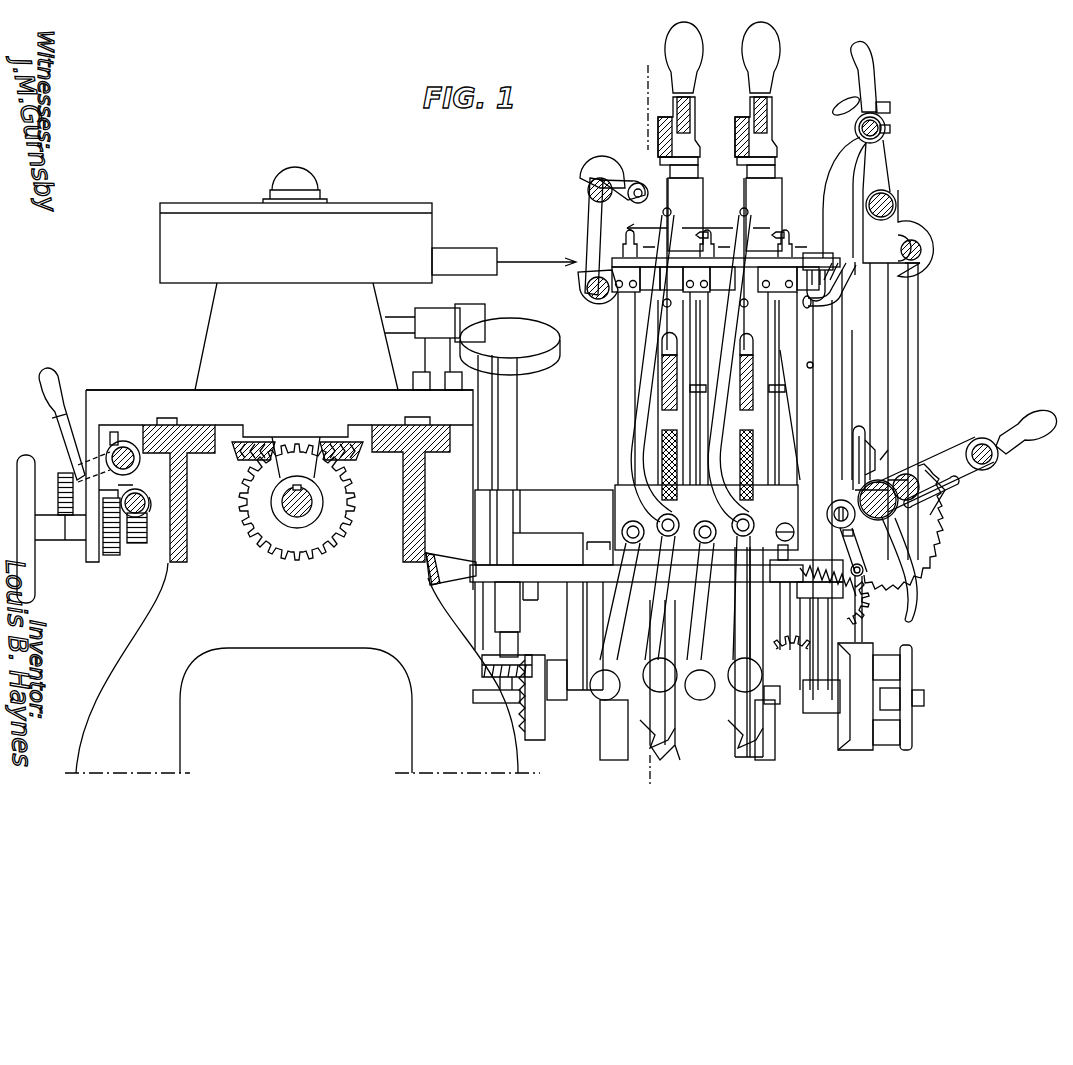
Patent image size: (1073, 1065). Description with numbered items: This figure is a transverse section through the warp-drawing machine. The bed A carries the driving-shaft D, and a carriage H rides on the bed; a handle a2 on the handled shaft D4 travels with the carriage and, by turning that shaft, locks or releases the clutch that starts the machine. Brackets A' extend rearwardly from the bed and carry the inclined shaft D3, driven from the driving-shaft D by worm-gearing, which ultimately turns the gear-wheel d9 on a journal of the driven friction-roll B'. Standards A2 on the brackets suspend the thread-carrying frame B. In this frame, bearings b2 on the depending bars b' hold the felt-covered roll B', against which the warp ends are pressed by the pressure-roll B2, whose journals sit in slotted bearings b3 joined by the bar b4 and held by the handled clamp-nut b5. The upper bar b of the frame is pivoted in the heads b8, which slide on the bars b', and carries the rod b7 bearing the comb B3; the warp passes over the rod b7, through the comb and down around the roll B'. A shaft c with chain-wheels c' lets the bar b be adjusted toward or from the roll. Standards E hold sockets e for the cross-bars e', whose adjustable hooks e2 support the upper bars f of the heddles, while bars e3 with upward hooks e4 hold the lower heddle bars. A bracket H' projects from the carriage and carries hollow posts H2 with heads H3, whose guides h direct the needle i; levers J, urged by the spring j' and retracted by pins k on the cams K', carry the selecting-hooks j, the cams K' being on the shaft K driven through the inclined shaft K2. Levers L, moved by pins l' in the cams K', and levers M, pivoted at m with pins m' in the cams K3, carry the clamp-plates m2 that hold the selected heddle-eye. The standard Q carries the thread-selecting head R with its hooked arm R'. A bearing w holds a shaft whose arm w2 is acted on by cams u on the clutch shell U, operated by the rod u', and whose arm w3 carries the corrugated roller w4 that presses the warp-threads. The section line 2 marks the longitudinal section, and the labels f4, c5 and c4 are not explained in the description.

The bed A is at (302, 470).
The carriage H is at (279, 378).
The needle i is at (536, 251).
The driving-shaft D is at (297, 487).
The handle a2 is at (62, 424).
The handled shaft D4 is at (86, 517).
The inclined shaft D3 is at (452, 570).
The inclined shaft K2 is at (515, 478).
The brackets or extensions A' is at (544, 527).
The bracket H' is at (636, 611).
The rod u' is at (688, 686).
The shaft K is at (679, 697).
The cams K3 is at (687, 730).
The pins k is at (772, 695).
The cams K' is at (701, 653).
The section line 2 is at (648, 425).
The standards E is at (721, 186).
The sockets e is at (723, 127).
The cross-bars e' is at (734, 115).
The adjustable hooks e2 is at (752, 114).
The pointer rod f4 is at (715, 224).
The selecting-hook j is at (715, 243).
The guides h is at (613, 230).
The heads H3 is at (726, 275).
The clamp-plates m2 is at (715, 277).
The hollow posts H2 is at (705, 388).
The hooks e4 is at (705, 400).
The bars e3 is at (803, 411).
The levers J is at (734, 392).
The upper bars of the heddles f is at (650, 372).
The levers L is at (706, 498).
The levers M is at (675, 591).
The pivot m is at (688, 532).
The pins m' is at (652, 685).
The pins l' is at (702, 675).
The spring j' is at (788, 415).
The standard Q is at (819, 500).
The standards A2 is at (855, 348).
The thread-selecting head R is at (825, 267).
The arm R' is at (837, 285).
The comb B3 is at (860, 130).
The rod b7 is at (893, 124).
The upper bar b is at (879, 190).
The thread-carrying frame B is at (898, 233).
The shaft c is at (907, 250).
The chain-wheels c' is at (924, 251).
The heads or bearings b8 is at (869, 260).
The depending bars b' is at (890, 433).
The slide c5 is at (861, 448).
The catch c4 is at (858, 440).
The bearings b2 is at (871, 478).
The pressure-roll B2 is at (906, 483).
The driven friction-roll B' is at (878, 500).
The slotted bearings b3 is at (935, 476).
The bar b4 is at (1011, 440).
The gear-wheel d9 is at (903, 527).
The handled clamp-nut b5 is at (908, 570).
The corrugated roller w4 is at (840, 505).
The arm w3 is at (854, 550).
The bearing w is at (855, 573).
The arm w2 is at (827, 617).
The cams u is at (842, 664).
The shell U is at (881, 696).